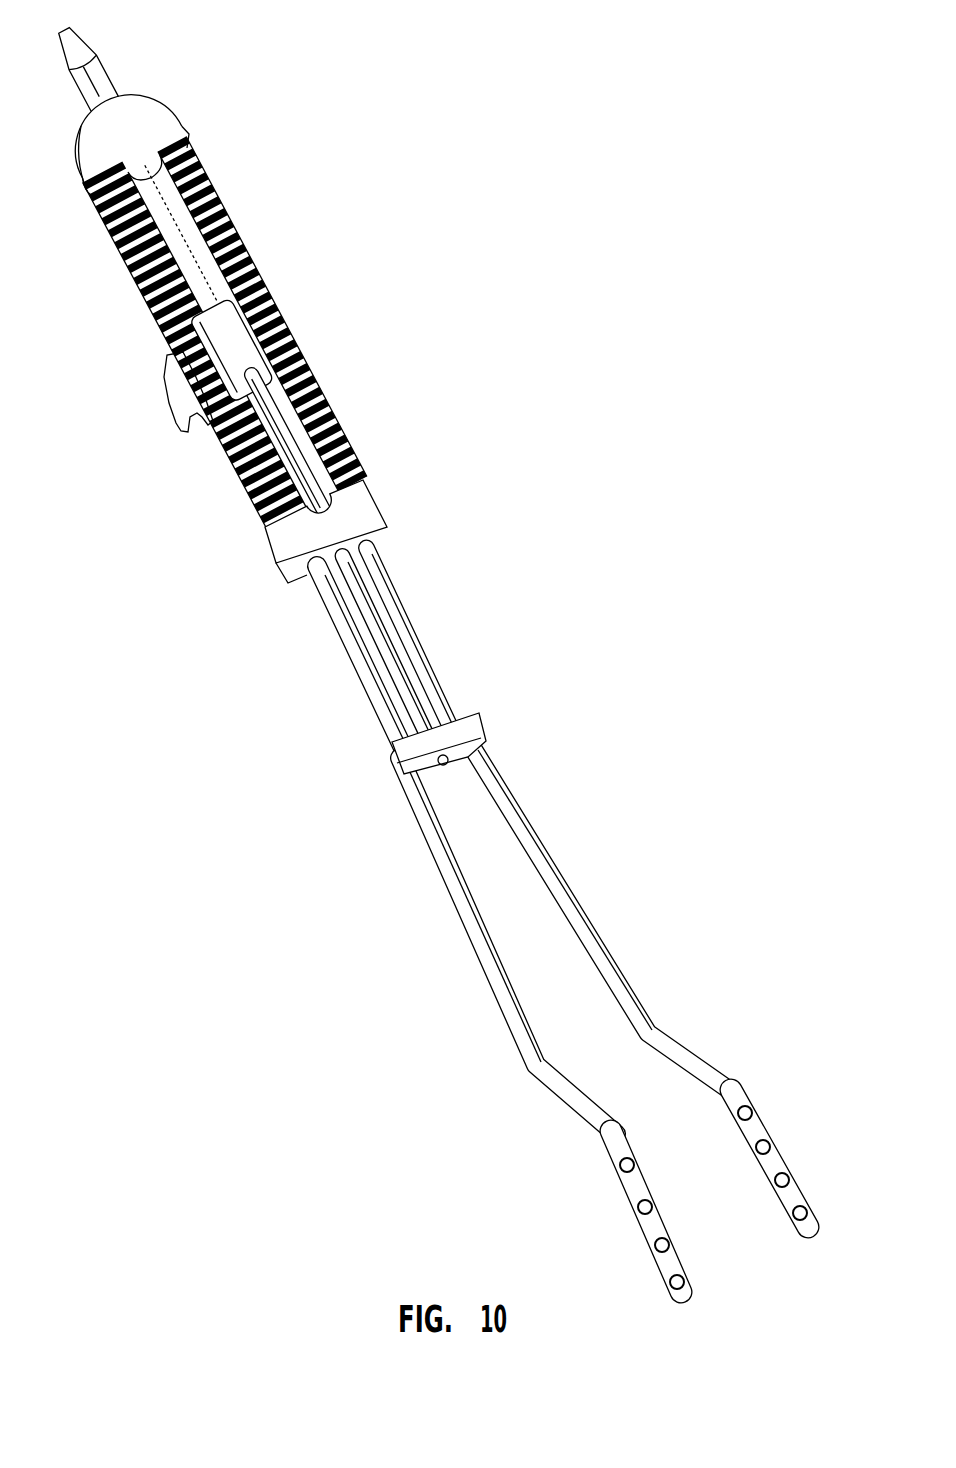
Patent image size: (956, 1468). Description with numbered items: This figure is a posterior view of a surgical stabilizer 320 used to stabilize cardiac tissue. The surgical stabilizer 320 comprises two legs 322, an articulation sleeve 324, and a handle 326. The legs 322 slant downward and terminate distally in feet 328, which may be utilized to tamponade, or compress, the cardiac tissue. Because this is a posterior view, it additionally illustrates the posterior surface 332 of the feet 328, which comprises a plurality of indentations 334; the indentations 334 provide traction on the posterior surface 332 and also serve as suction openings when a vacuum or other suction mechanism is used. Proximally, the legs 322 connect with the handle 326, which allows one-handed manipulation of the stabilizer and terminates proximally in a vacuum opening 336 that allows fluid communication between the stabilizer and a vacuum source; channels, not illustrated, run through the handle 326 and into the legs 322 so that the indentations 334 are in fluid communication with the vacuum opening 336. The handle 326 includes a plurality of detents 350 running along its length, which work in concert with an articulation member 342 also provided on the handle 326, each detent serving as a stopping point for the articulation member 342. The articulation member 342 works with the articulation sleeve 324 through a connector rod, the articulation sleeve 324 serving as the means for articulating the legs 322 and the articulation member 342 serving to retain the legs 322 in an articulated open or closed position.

The surgical stabilizer 320 is at (320, 757).
The legs 322 is at (448, 877).
The articulation sleeve 324 is at (455, 728).
The handle 326 is at (414, 504).
The feet 328 is at (748, 1072).
The posterior surface 332 is at (653, 1228).
The indentations 334 is at (667, 1245).
The vacuum opening 336 is at (62, 33).
The articulation member 342 is at (187, 395).
The detents 350 is at (243, 487).